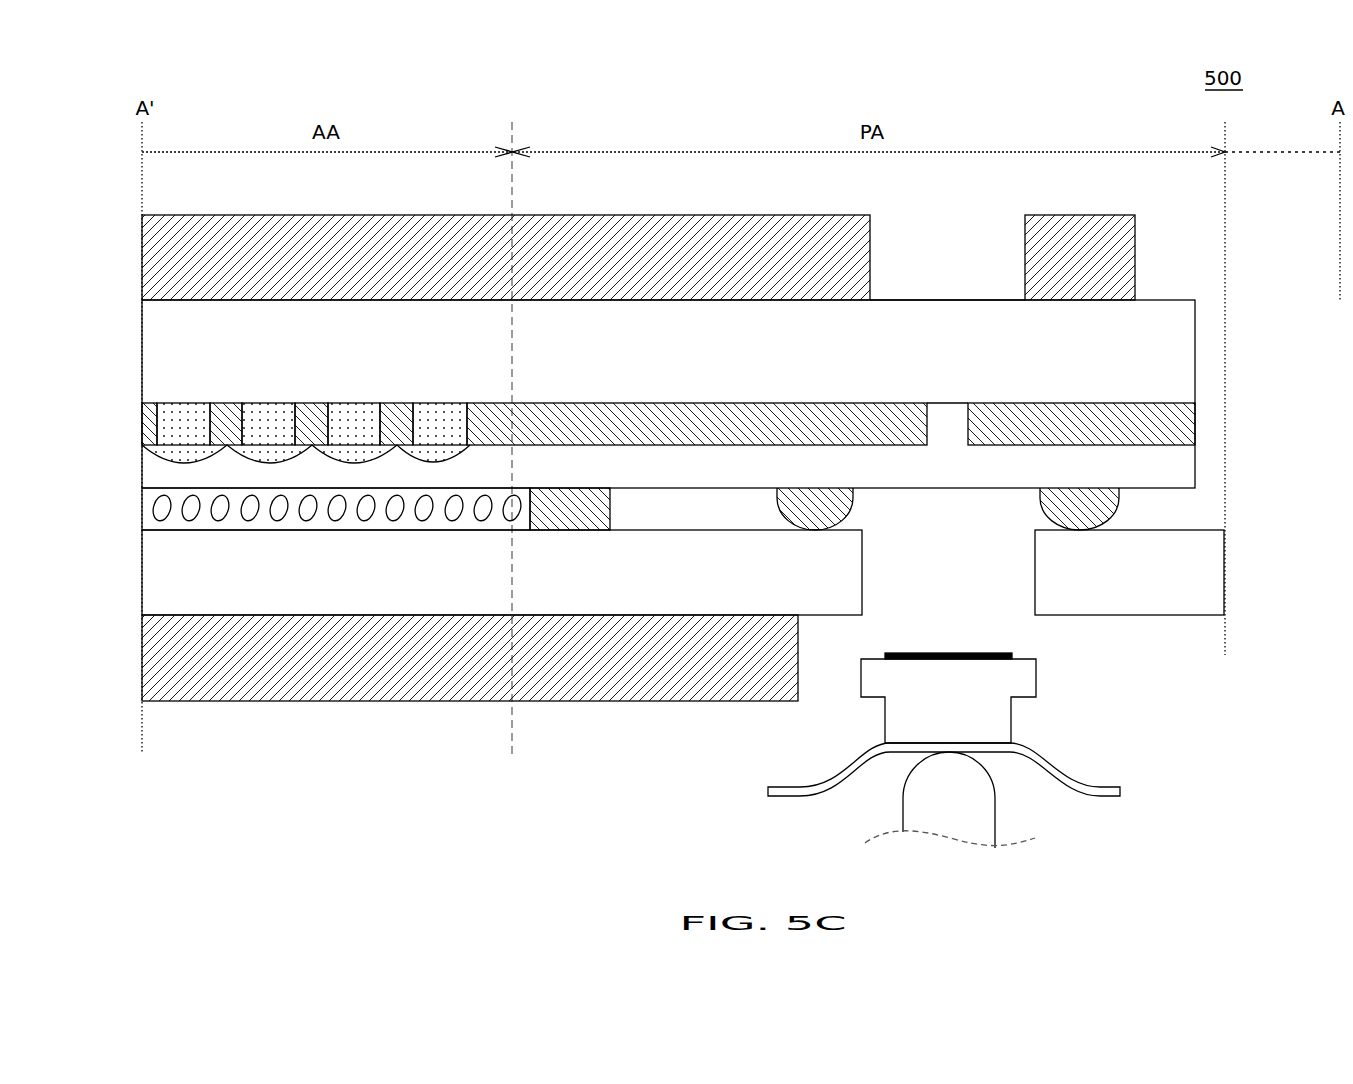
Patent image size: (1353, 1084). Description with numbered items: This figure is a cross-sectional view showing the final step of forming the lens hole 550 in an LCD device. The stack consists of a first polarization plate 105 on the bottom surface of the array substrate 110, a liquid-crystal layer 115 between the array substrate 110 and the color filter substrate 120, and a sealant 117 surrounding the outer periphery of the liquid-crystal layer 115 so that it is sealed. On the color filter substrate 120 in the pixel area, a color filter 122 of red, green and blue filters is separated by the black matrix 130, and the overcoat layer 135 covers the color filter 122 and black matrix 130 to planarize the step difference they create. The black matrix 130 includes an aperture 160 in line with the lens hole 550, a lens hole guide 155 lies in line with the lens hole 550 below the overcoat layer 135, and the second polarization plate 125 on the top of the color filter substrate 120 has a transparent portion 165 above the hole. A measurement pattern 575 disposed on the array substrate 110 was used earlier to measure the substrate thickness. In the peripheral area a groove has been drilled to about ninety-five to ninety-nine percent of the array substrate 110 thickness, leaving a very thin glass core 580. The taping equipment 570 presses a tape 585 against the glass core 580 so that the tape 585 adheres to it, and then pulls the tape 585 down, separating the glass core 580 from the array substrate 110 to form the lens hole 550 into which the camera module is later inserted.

The first polarization plate 105 is at (683, 682).
The array substrate 110 is at (1190, 583).
The liquid-crystal layer 115 is at (437, 522).
The sealant 117 is at (568, 508).
The color filter substrate 120 is at (1160, 331).
The color filter 122 is at (173, 415).
The second polarization plate 125 is at (1105, 258).
The black matrix 130 is at (1170, 425).
The overcoat layer 135 is at (166, 474).
The lens hole guide 155 is at (1098, 503).
The aperture 160 is at (956, 393).
The transparent portion 165 is at (990, 220).
The lens hole 550 is at (967, 590).
The taping equipment 570 is at (916, 804).
The measurement pattern 575 is at (987, 662).
The glass core 580 is at (1000, 728).
The tape 585 is at (1113, 795).